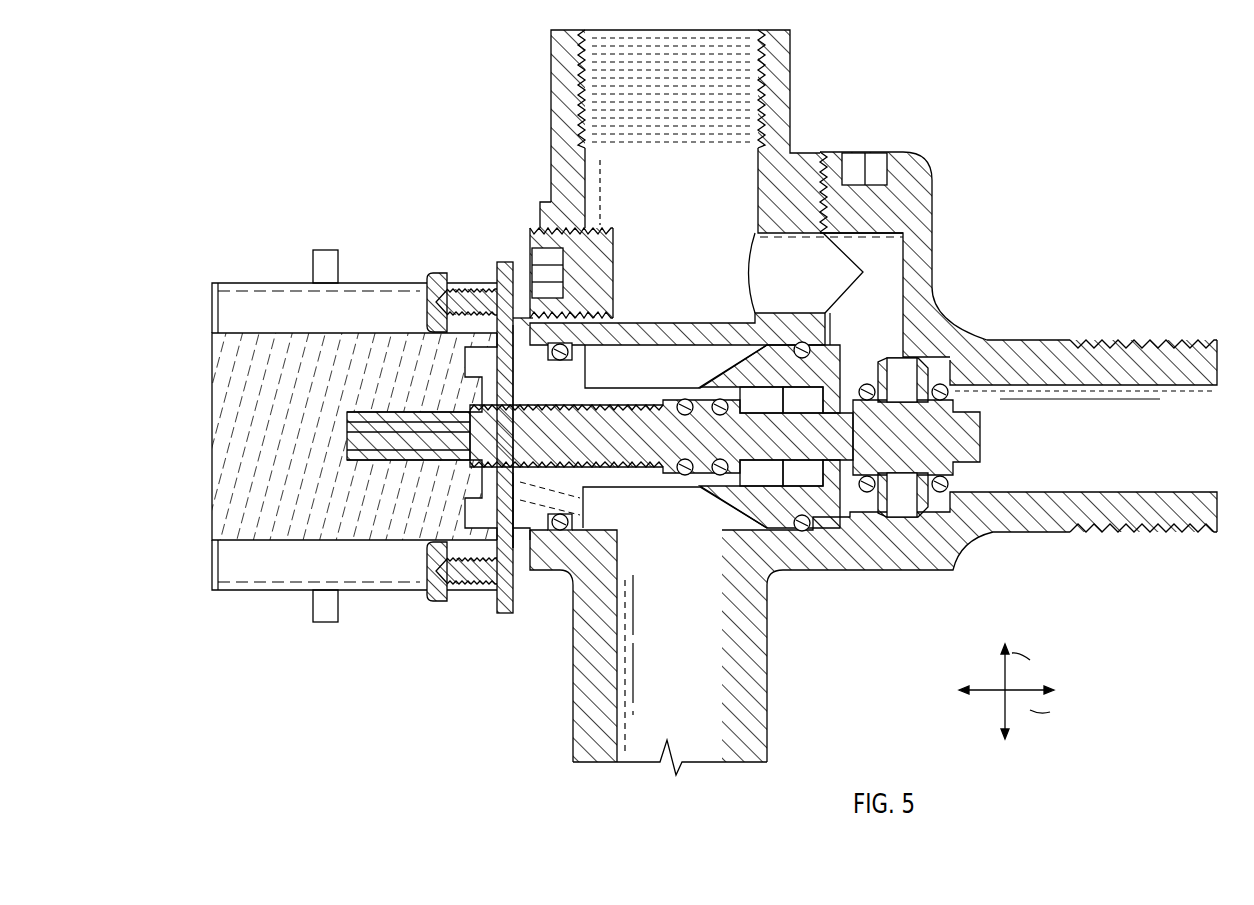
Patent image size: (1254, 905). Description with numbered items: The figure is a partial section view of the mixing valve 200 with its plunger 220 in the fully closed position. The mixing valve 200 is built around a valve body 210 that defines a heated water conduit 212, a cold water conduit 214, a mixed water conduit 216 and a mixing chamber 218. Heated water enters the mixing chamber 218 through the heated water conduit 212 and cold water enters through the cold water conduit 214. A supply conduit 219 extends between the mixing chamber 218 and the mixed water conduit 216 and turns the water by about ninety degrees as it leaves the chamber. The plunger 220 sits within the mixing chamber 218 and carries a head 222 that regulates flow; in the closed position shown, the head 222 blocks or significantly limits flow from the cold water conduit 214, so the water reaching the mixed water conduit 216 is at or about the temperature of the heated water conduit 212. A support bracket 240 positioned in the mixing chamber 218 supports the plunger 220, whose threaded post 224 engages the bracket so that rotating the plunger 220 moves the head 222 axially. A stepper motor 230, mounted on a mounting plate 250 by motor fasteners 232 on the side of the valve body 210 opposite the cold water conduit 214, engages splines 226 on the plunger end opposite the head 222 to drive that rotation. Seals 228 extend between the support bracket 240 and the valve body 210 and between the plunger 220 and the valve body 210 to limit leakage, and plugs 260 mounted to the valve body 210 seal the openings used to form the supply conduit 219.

The mixing valve 200 is at (303, 92).
The valve body 210 is at (640, 332).
The heated water conduit 212 is at (748, 692).
The cold water conduit 214 is at (1122, 345).
The mixed water conduit 216 is at (772, 76).
The mixing chamber 218 is at (615, 516).
The supply conduit 219 is at (862, 300).
The plunger 220 is at (770, 430).
The head 222 is at (918, 442).
The post 224 is at (676, 472).
The splines 226 is at (350, 428).
The seals 228 is at (937, 494).
The motor 230 is at (232, 310).
The motor fasteners 232 is at (430, 290).
The support bracket 240 is at (742, 500).
The mounting plate 250 is at (503, 262).
The plugs 260 is at (548, 236).